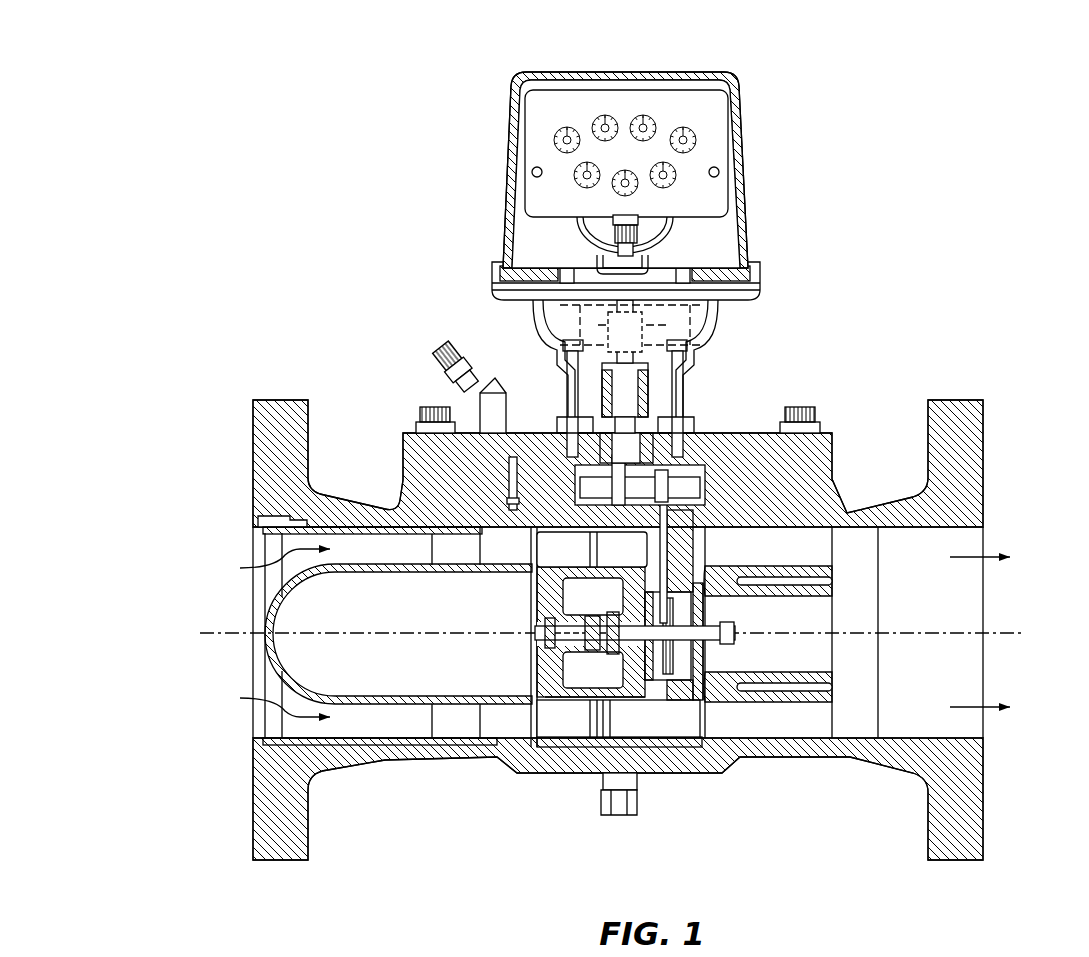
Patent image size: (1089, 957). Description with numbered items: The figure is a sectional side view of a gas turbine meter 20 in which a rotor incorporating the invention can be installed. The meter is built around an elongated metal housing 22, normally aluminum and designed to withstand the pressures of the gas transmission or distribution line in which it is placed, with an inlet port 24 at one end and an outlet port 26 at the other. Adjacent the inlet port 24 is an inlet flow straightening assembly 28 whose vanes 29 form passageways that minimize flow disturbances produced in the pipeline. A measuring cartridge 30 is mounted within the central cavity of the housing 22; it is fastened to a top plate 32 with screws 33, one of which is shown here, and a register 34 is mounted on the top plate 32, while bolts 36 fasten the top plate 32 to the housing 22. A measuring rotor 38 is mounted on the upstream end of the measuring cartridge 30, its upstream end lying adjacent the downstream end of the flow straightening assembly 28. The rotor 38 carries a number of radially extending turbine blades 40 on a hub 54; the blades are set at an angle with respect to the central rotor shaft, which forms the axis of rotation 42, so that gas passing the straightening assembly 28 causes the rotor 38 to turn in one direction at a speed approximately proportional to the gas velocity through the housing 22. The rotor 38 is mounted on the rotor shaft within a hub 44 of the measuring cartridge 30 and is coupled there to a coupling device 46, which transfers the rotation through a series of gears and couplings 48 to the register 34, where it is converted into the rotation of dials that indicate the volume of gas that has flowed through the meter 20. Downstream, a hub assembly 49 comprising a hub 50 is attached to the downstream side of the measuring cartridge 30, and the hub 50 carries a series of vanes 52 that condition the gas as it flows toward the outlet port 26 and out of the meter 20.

The gas turbine meter 20 is at (486, 896).
The housing 22 is at (510, 776).
The inlet port 24 is at (262, 722).
The outlet port 26 is at (986, 735).
The inlet flow straightening assembly 28 is at (362, 629).
The vanes 29 is at (356, 562).
The measuring cartridge 30 is at (661, 727).
The top plate 32 is at (833, 433).
The screws 33 is at (512, 465).
The register 34 is at (750, 191).
The bolts 36 is at (425, 407).
The measuring rotor 38 is at (553, 677).
The turbine blades 40 is at (553, 545).
The axis of rotation 42 is at (625, 648).
The hub 44 is at (608, 640).
The coupling device 46 is at (685, 655).
The gears and couplings 48 is at (643, 481).
The hub assembly 49 is at (725, 760).
The hub 50 is at (807, 705).
The vanes 52 is at (768, 638).
The hub 54 is at (533, 583).